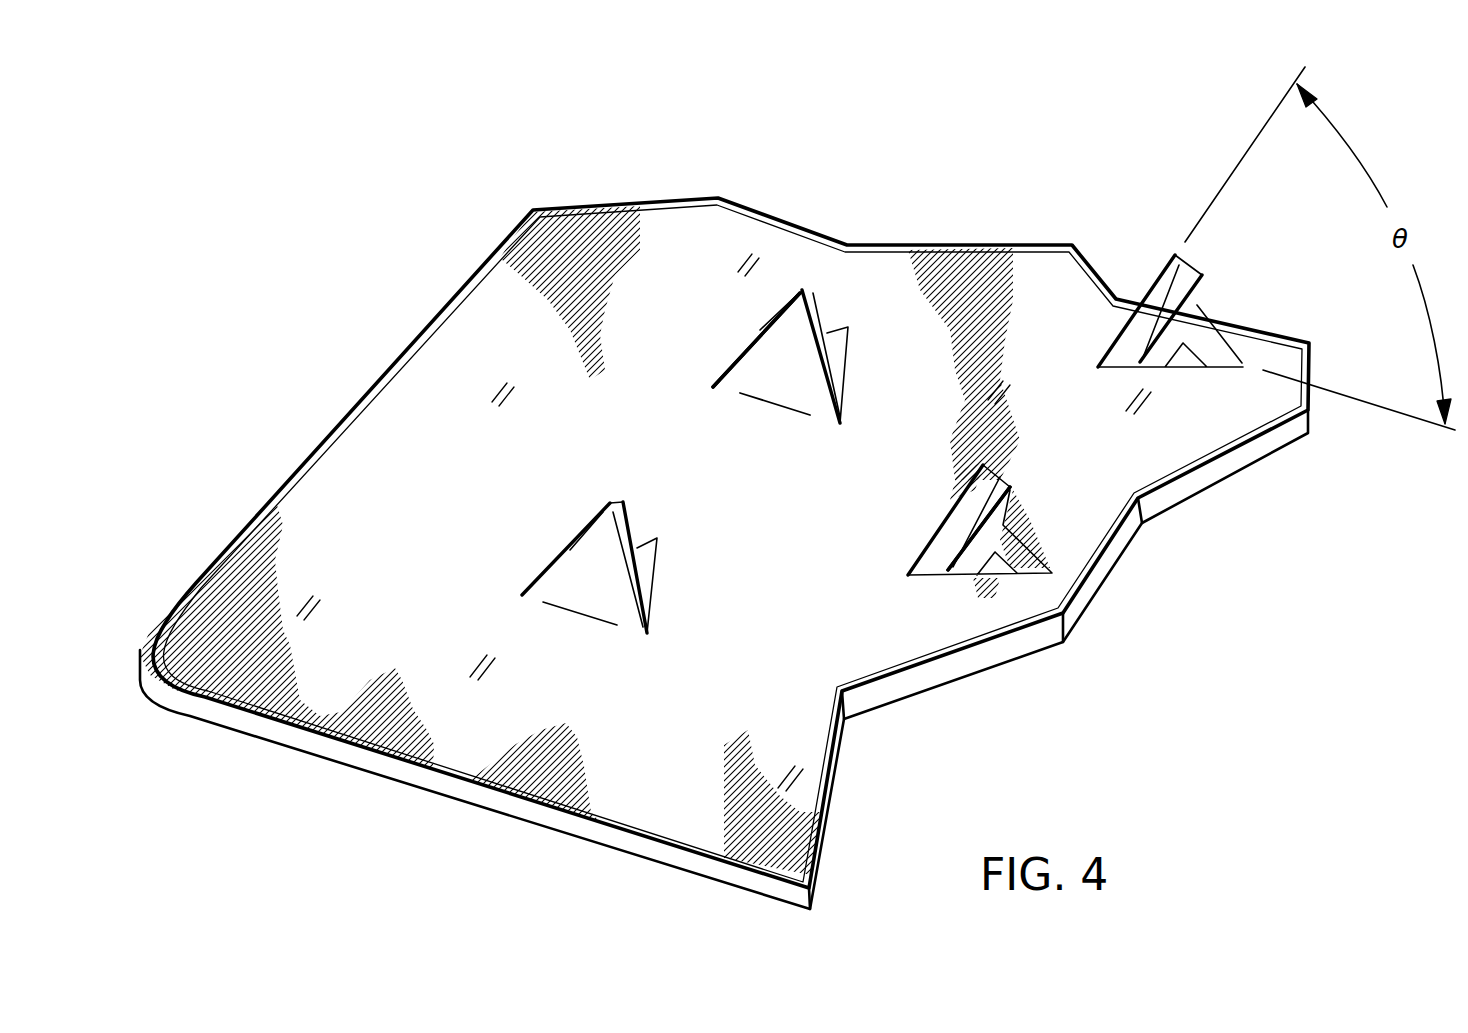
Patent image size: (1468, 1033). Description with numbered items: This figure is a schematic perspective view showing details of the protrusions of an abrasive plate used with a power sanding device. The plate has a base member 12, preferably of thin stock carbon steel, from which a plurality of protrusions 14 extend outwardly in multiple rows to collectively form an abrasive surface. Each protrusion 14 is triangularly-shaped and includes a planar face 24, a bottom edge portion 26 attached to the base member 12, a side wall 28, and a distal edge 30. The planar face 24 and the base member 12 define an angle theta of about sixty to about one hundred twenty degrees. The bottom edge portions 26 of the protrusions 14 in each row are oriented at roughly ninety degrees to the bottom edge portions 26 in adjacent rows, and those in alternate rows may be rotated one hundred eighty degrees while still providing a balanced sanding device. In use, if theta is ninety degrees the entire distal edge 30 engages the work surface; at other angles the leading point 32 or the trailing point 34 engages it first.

The base member 12 is at (363, 762).
The protrusion 14 is at (1230, 253).
The planar face 24 is at (983, 543).
The bottom edge portion 26 is at (582, 616).
The side wall 28 is at (992, 506).
The distal edge 30 is at (830, 283).
The leading point 32 is at (802, 293).
The trailing point 34 is at (802, 293).